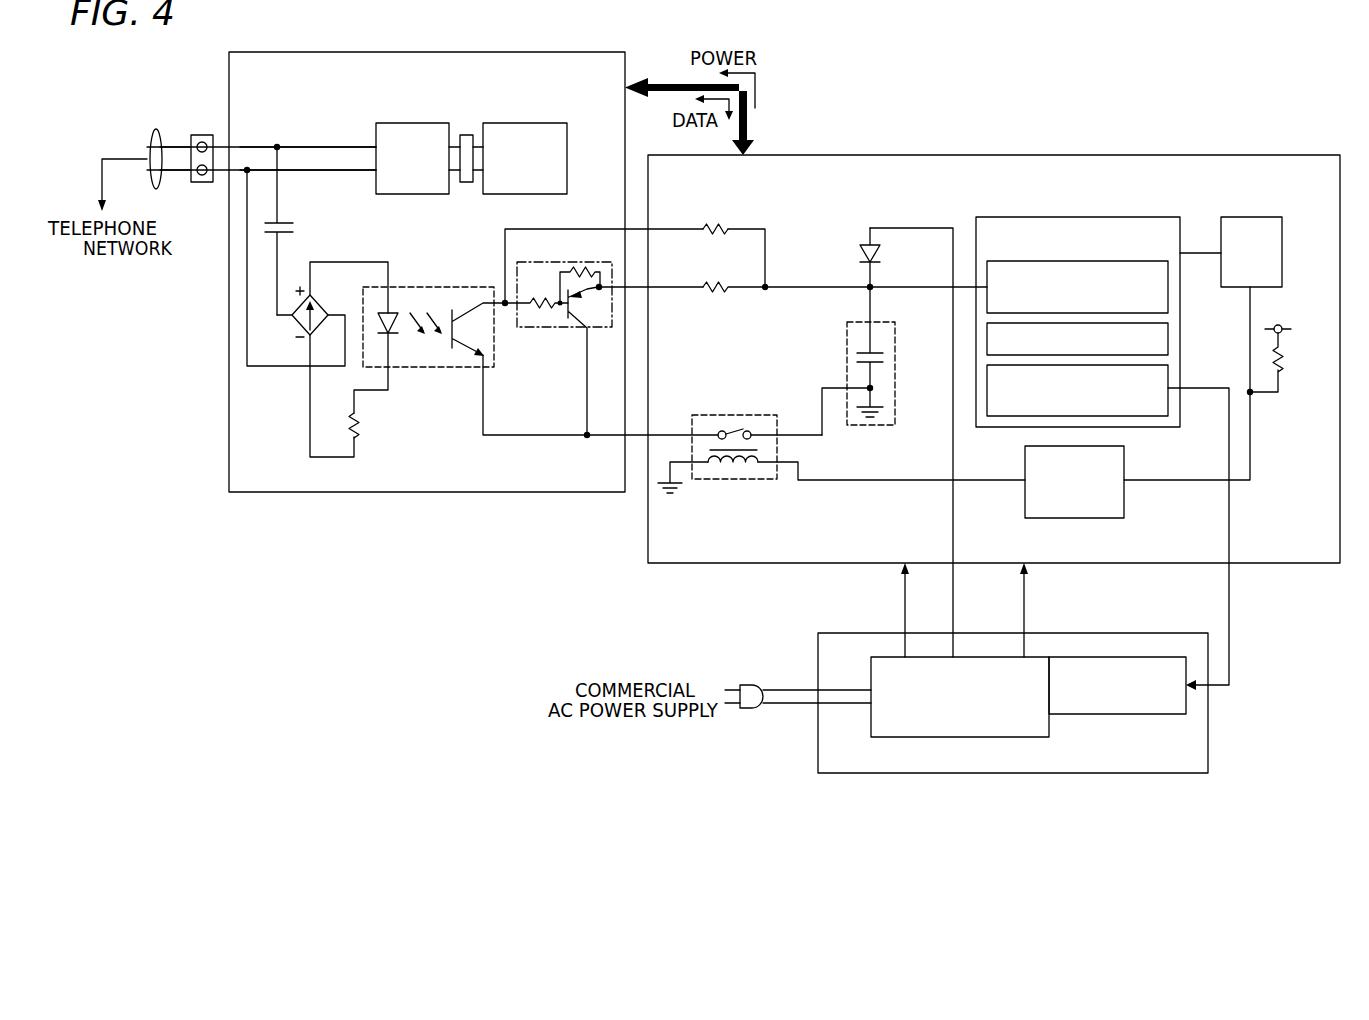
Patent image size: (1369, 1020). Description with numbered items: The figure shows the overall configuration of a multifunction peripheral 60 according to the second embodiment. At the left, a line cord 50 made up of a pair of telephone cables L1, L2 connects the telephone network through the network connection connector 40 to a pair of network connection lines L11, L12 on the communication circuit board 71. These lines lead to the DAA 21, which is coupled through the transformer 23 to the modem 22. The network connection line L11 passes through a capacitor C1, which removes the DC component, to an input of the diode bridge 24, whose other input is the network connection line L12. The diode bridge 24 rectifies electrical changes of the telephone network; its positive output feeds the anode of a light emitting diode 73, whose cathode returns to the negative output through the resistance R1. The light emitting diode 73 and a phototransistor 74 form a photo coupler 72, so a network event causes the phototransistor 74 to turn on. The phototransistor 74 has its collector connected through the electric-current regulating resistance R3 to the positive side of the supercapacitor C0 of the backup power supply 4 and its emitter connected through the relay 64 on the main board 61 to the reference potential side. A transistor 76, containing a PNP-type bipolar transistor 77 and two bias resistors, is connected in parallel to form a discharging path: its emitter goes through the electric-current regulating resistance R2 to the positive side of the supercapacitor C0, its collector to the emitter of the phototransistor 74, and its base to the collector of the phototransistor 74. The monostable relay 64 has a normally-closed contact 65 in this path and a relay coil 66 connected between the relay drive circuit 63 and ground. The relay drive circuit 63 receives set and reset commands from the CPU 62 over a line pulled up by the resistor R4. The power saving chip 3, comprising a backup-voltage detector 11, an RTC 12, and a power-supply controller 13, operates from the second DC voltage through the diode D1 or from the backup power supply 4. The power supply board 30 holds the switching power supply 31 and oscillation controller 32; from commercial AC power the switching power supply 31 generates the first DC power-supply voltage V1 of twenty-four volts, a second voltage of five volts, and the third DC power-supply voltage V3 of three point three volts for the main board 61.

The line cord 50 is at (156, 128).
The network connection connector 40 is at (203, 135).
The communication circuit board 71 is at (547, 51).
The DAA 21 is at (416, 122).
The transformer 23 is at (467, 135).
The modem 22 is at (534, 122).
The diode bridge 24 is at (318, 303).
The light emitting diode 73 is at (391, 311).
The phototransistor 74 is at (468, 308).
The photo coupler 72 is at (435, 368).
The transistor 76 is at (525, 328).
The PNP-type bipolar transistor 77 is at (575, 320).
The multifunction peripheral 60 is at (1142, 95).
The main board 61 is at (1032, 155).
The power saving chip 3 is at (1143, 212).
The CPU 62 is at (1257, 212).
The backup-voltage detector 11 is at (1170, 287).
The RTC 12 is at (1170, 338).
The power-supply controller 13 is at (1170, 375).
The relay drive circuit 63 is at (1126, 462).
The monostable relay 64 is at (763, 413).
The normally-closed contact 65 is at (733, 430).
The relay coil 66 is at (733, 470).
The backup power supply 4 is at (897, 401).
The power supply board 30 is at (818, 760).
The switching power supply 31 is at (870, 679).
The oscillation controller 32 is at (1118, 714).
The telephone cable L1 is at (173, 143).
The telephone cable L2 is at (178, 173).
The network connection line L11 is at (259, 145).
The network connection line L12 is at (350, 173).
The capacitor C1 is at (293, 232).
The resistance R1 is at (360, 425).
The electric-current regulating resistance R2 is at (726, 296).
The electric-current regulating resistance R3 is at (728, 226).
The pull-up resistor R4 is at (1290, 360).
The diode D1 is at (859, 256).
The supercapacitor C0 is at (888, 357).
The first DC power-supply voltage V1 is at (875, 610).
The third DC power-supply voltage V3 is at (1055, 610).